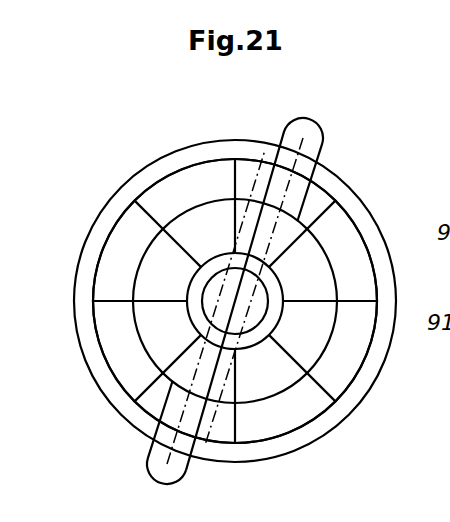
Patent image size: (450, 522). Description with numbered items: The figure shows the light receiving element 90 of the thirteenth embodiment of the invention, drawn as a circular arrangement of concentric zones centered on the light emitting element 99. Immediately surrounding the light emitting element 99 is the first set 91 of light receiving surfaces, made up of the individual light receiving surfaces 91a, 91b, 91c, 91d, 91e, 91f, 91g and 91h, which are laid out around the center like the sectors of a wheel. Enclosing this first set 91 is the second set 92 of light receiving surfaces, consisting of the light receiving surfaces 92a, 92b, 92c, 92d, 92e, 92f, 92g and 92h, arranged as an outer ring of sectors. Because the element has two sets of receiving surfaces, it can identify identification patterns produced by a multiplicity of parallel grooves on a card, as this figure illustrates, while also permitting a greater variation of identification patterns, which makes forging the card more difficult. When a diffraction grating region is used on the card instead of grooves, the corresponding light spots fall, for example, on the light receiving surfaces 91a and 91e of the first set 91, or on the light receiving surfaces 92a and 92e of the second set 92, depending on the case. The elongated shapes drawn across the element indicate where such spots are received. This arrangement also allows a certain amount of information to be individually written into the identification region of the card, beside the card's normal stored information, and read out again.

The light receiving element 90 is at (353, 103).
The first set of light receiving surfaces 91 is at (338, 300).
The light receiving surface 91a is at (325, 190).
The light receiving surface 91b is at (314, 272).
The light receiving surface 91c is at (313, 348).
The light receiving surface 91d is at (258, 387).
The light receiving surface 91e is at (150, 432).
The light receiving surface 91f is at (140, 314).
The light receiving surface 91g is at (122, 220).
The light receiving surface 91h is at (212, 213).
The second set of light receiving surfaces 92 is at (100, 247).
The light receiving surface 92a is at (257, 163).
The light receiving surface 92b is at (343, 225).
The light receiving surface 92c is at (358, 333).
The light receiving surface 92d is at (307, 407).
The light receiving surface 92e is at (212, 430).
The light receiving surface 92f is at (128, 380).
The light receiving surface 92g is at (100, 283).
The light receiving surface 92h is at (165, 187).
The light emitting element 99 is at (217, 280).